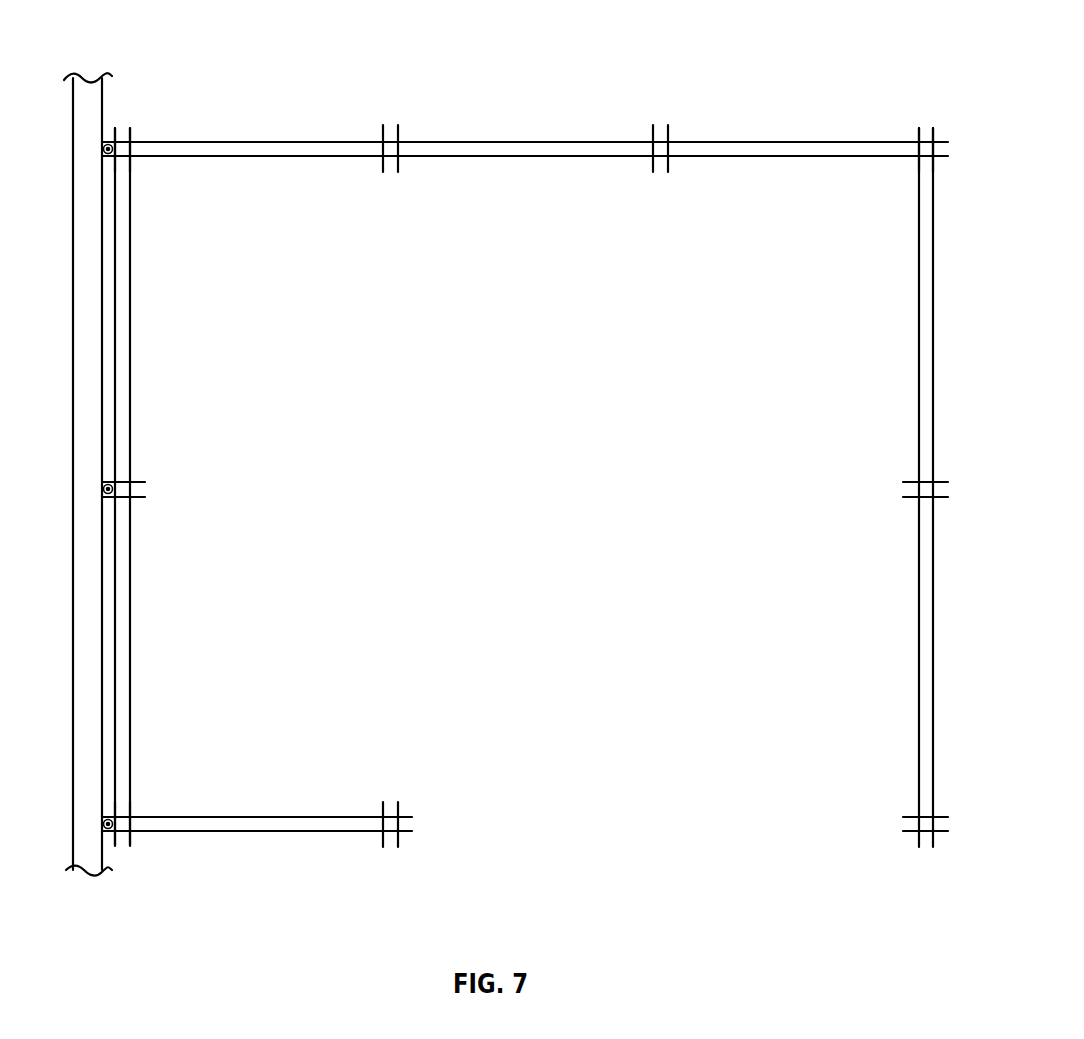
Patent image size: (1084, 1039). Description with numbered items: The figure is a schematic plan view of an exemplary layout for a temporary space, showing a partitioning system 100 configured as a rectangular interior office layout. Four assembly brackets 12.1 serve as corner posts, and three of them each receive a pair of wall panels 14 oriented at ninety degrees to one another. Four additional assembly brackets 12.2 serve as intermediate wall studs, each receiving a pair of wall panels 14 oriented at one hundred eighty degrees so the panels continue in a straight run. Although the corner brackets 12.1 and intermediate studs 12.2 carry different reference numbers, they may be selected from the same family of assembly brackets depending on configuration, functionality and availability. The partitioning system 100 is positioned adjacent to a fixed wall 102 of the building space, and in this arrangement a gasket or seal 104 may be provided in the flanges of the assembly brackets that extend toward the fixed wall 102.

The partitioning system 100 is at (800, 33).
The fixed wall 102 is at (105, 97).
The gasket or seal 104 is at (112, 156).
The assembly bracket 12.1 is at (138, 143).
The assembly bracket 12.2 is at (402, 150).
The wall panel 14 is at (300, 141).